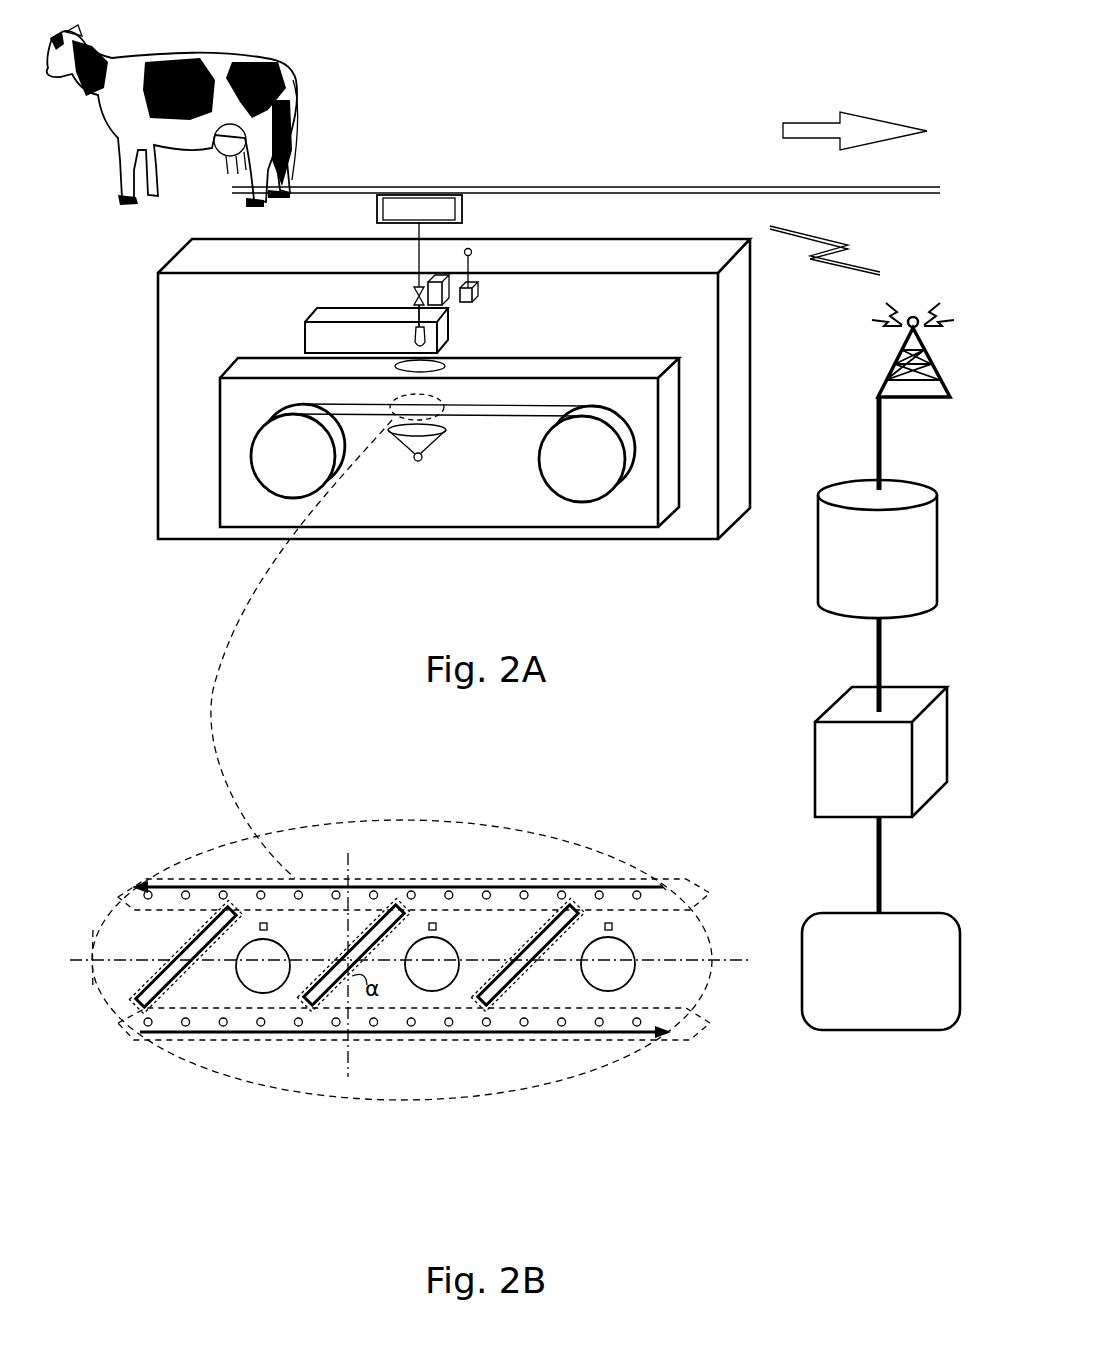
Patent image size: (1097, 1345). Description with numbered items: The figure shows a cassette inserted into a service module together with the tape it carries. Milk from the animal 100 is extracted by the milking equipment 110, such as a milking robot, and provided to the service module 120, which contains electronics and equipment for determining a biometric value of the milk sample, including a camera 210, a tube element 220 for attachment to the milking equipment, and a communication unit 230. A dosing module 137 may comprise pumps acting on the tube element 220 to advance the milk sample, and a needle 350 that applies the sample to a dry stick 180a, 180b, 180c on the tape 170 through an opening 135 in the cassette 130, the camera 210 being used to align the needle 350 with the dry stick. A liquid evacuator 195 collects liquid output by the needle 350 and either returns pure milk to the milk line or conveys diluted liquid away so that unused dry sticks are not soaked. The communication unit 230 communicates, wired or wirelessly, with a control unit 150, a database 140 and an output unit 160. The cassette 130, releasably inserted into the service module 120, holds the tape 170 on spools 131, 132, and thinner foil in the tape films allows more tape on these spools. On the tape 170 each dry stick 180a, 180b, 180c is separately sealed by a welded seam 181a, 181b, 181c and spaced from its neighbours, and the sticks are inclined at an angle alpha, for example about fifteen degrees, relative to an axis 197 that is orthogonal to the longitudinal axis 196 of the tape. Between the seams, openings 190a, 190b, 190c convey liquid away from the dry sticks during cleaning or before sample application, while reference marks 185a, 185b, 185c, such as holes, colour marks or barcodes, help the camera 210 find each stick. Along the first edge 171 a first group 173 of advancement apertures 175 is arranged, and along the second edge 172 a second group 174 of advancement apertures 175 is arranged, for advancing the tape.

In FIG. 2A, the animal 100 is at (263, 60).
In FIG. 2A, the milking equipment 110 is at (622, 189).
In FIG. 2A, the service module 120 is at (190, 343).
In FIG. 2A, the cassette 130 is at (240, 432).
In FIG. 2A, the spool 131 is at (290, 458).
In FIG. 2A, the spool 132 is at (578, 458).
In FIG. 2A, the opening 135 is at (398, 368).
In FIG. 2A, the dosing module 137 is at (327, 343).
In FIG. 2A, the database 140 is at (852, 570).
In FIG. 2A, the control unit 150 is at (842, 777).
In FIG. 2A, the output unit 160 is at (802, 1002).
In FIG. 2B, the tape 170 is at (497, 938).
In FIG. 2B, the first edge 171 is at (587, 886).
In FIG. 2B, the second edge 172 is at (618, 1033).
In FIG. 2B, the first group of advancement apertures 173 is at (668, 886).
In FIG. 2B, the second group of advancement apertures 174 is at (690, 1027).
In FIG. 2B, the advancement apertures 175 is at (336, 891).
In FIG. 2B, the dry stick 180a is at (148, 1008).
In FIG. 2B, the dry stick 180b is at (313, 1003).
In FIG. 2B, the dry stick 180c is at (485, 1002).
In FIG. 2B, the welded seam 181a is at (170, 958).
In FIG. 2B, the welded seam 181b is at (317, 995).
In FIG. 2B, the welded seam 181c is at (507, 990).
In FIG. 2B, the reference mark 185a is at (263, 920).
In FIG. 2B, the reference mark 185b is at (432, 921).
In FIG. 2B, the reference mark 185c is at (613, 924).
In FIG. 2B, the opening 190a is at (253, 980).
In FIG. 2B, the opening 190b is at (422, 983).
In FIG. 2B, the opening 190c is at (610, 982).
In FIG. 2A, the liquid evacuator 195 is at (428, 445).
In FIG. 2B, the longitudinal axis 196 is at (122, 963).
In FIG. 2B, the axis 197 is at (348, 1075).
In FIG. 2A, the camera 210 is at (440, 281).
In FIG. 2A, the tube element 220 is at (417, 288).
In FIG. 2A, the communication unit 230 is at (473, 294).
In FIG. 2A, the needle 350 is at (418, 330).